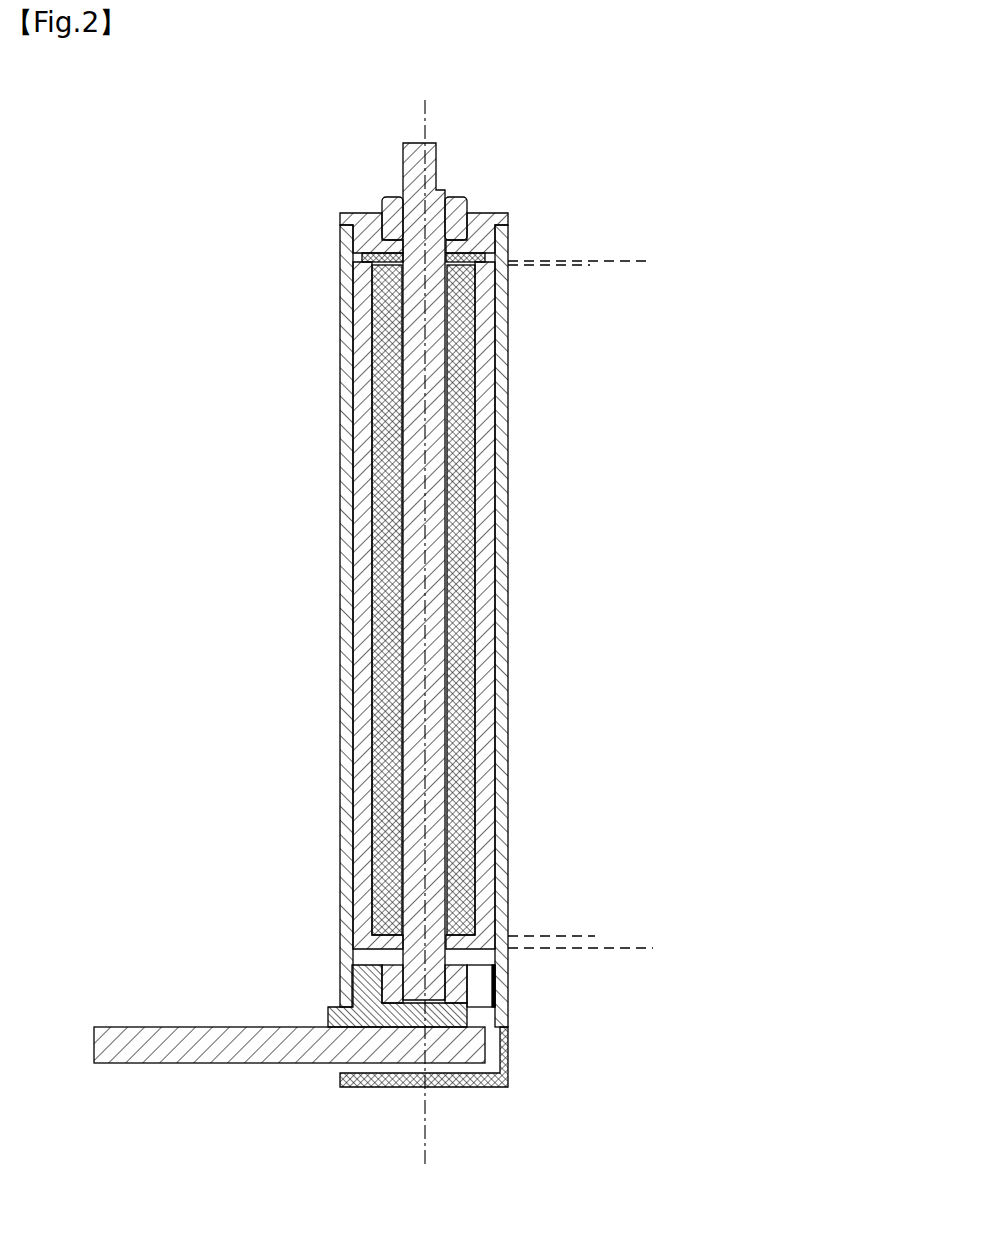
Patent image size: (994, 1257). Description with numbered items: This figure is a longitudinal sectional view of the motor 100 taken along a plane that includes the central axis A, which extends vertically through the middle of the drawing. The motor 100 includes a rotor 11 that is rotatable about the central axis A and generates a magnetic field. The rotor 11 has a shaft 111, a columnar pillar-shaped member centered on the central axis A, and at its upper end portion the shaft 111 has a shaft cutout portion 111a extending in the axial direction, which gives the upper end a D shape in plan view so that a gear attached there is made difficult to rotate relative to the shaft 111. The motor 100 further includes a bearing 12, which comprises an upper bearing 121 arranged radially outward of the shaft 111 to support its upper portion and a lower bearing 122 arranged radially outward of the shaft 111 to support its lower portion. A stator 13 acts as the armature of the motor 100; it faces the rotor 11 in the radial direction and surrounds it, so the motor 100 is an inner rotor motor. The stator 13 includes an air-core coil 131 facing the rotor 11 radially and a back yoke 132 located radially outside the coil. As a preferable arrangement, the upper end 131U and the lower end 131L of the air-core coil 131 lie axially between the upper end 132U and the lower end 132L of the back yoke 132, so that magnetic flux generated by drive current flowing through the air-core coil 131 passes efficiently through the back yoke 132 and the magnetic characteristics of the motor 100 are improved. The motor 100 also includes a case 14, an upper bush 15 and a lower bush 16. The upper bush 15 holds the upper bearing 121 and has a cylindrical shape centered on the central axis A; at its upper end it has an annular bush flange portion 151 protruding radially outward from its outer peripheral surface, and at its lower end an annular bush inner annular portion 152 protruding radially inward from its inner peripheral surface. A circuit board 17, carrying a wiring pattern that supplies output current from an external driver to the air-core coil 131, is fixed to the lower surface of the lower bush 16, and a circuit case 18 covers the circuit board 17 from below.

The motor 100 is at (640, 168).
The rotor 11 is at (447, 558).
The shaft 111 is at (403, 186).
The shaft cutout portion 111a is at (436, 162).
The bearing 12 is at (505, 596).
The upper bearing 121 is at (467, 208).
The lower bearing 122 is at (470, 992).
The stator 13 is at (500, 365).
The coil 131 is at (490, 457).
The back yoke 132 is at (497, 402).
The upper end of air-core coil 131U is at (585, 265).
The upper end of back yoke 132U is at (630, 261).
The lower end of air-core coil 131L is at (580, 936).
The lower end of back yoke 132L is at (633, 948).
The case 14 is at (340, 435).
The upper bush 15 is at (353, 245).
The bush flange portion 151 is at (345, 220).
The bush inner annular portion 152 is at (353, 262).
The lower bush 16 is at (352, 975).
The circuit board 17 is at (222, 1027).
The circuit case 18 is at (508, 1080).
The central axis A is at (428, 118).